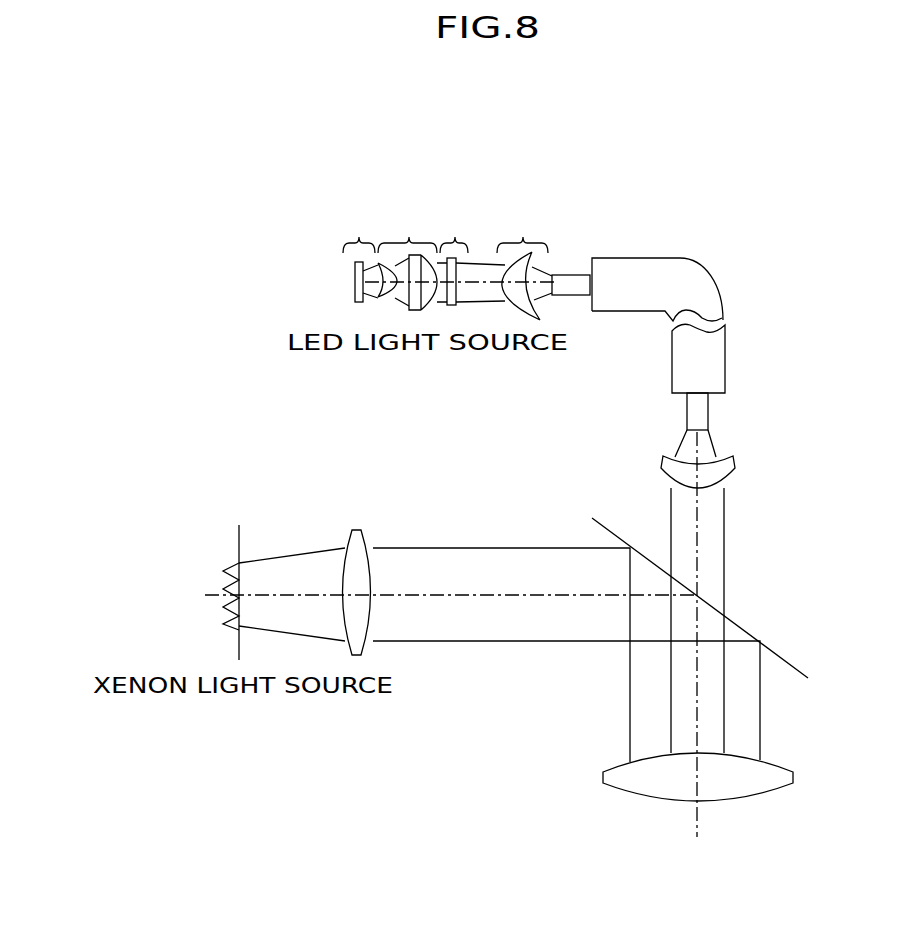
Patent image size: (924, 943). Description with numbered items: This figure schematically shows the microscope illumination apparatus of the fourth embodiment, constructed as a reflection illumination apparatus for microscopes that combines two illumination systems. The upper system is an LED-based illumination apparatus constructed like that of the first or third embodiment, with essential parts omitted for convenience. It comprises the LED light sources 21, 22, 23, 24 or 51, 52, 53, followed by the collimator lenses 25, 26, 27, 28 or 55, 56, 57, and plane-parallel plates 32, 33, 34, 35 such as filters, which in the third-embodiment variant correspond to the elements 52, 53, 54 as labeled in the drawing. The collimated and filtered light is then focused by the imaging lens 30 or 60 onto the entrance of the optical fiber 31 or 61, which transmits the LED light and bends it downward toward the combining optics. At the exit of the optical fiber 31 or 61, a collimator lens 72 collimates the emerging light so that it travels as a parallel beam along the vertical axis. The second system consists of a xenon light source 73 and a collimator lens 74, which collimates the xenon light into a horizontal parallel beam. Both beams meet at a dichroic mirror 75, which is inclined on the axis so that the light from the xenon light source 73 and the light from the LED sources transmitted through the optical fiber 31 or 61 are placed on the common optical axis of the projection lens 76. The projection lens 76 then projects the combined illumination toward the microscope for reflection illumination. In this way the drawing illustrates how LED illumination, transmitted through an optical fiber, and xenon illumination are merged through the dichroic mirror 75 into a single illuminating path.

The light source 21 is at (555, 194).
The light source 22 is at (555, 194).
The light source 23 is at (555, 194).
The light source 24 is at (555, 194).
The LED light source 51 is at (359, 237).
The collimator lens 25 is at (596, 218).
The collimator lens 26 is at (596, 218).
The collimator lens 27 is at (596, 218).
The collimator lens 28 is at (596, 218).
The collimator lens 55 is at (596, 218).
The collimator lens 56 is at (596, 218).
The collimator lens 57 is at (409, 237).
The plane-parallel plate 32 is at (650, 237).
The plane-parallel plate 33 is at (650, 237).
The plane-parallel plate 34 is at (650, 237).
The plane-parallel plate 35 is at (650, 237).
The LED light source 52 is at (650, 237).
The LED light source 53 is at (650, 237).
The filter 54 is at (455, 237).
The imaging lens 30 is at (568, 265).
The imaging lens 60 is at (523, 237).
The optical fiber 31 is at (717, 350).
The optical fiber 61 is at (552, 253).
The collimator lens 72 is at (734, 470).
The xenon light source 73 is at (239, 540).
The collimator lens 74 is at (352, 535).
The dichroic mirror 75 is at (782, 652).
The projection lens 76 is at (770, 768).